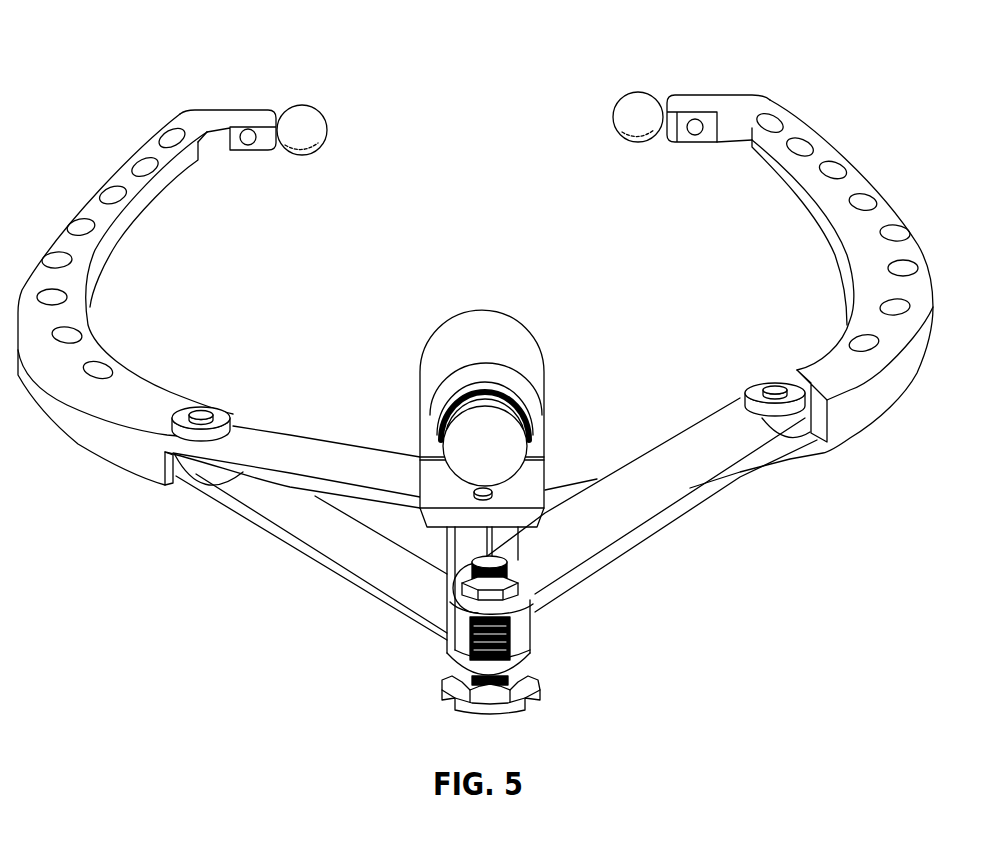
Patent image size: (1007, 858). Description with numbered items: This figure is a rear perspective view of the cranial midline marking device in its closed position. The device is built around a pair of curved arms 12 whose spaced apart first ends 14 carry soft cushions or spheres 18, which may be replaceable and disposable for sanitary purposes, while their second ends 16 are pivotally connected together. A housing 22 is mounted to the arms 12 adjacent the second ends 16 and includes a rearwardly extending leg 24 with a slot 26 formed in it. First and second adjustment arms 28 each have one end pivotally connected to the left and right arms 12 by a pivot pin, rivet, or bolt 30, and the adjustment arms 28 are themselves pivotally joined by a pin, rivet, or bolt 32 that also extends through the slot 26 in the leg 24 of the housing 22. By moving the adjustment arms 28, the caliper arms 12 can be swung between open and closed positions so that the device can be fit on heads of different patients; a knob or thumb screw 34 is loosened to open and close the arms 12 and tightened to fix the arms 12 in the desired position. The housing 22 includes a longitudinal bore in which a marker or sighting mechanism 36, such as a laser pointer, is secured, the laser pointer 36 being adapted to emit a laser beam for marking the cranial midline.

The curved arms 12 is at (125, 178).
The first ends 14 is at (240, 116).
The second ends 16 is at (294, 436).
The soft cushions or spheres 18 is at (305, 106).
The housing 22 is at (505, 325).
The rearwardly extending leg 24 is at (457, 655).
The slot 26 is at (513, 637).
The adjustment arms 28 is at (353, 556).
The pivot pin, rivet, or bolt 30 is at (201, 413).
The nut 32 is at (513, 563).
The knob or thumb screw 34 is at (527, 693).
The marker or sighting mechanism 36 is at (443, 432).